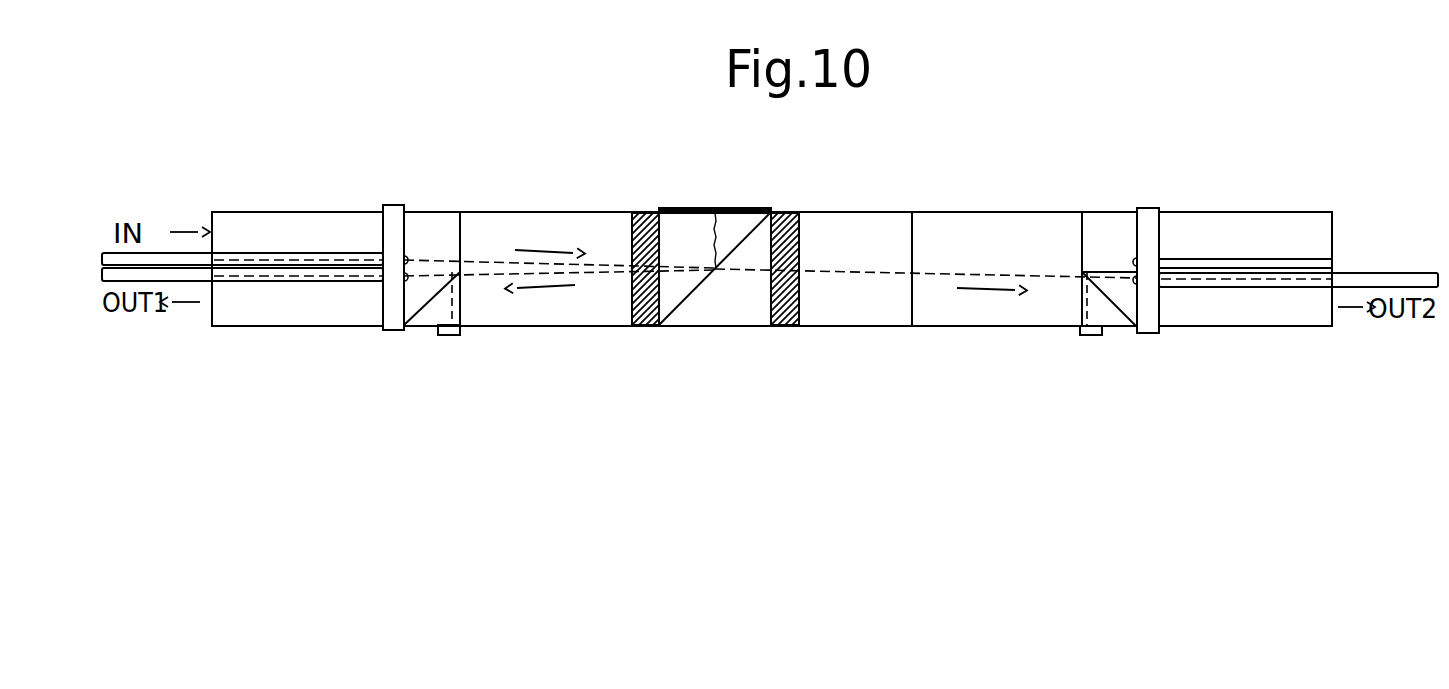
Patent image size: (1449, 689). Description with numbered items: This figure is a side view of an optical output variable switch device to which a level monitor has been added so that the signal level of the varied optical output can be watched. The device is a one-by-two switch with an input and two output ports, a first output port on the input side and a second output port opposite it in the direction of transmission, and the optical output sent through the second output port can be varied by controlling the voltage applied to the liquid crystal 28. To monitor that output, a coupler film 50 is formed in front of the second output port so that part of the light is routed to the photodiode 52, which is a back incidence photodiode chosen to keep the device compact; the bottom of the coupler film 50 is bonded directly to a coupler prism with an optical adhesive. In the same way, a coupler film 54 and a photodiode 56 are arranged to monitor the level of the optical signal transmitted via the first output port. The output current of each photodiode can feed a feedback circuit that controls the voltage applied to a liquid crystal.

The liquid crystal 28 is at (782, 212).
The coupler film 50 is at (1120, 318).
The photodiode 52 is at (1090, 338).
The coupler film 54 is at (423, 313).
The photodiode 56 is at (452, 335).